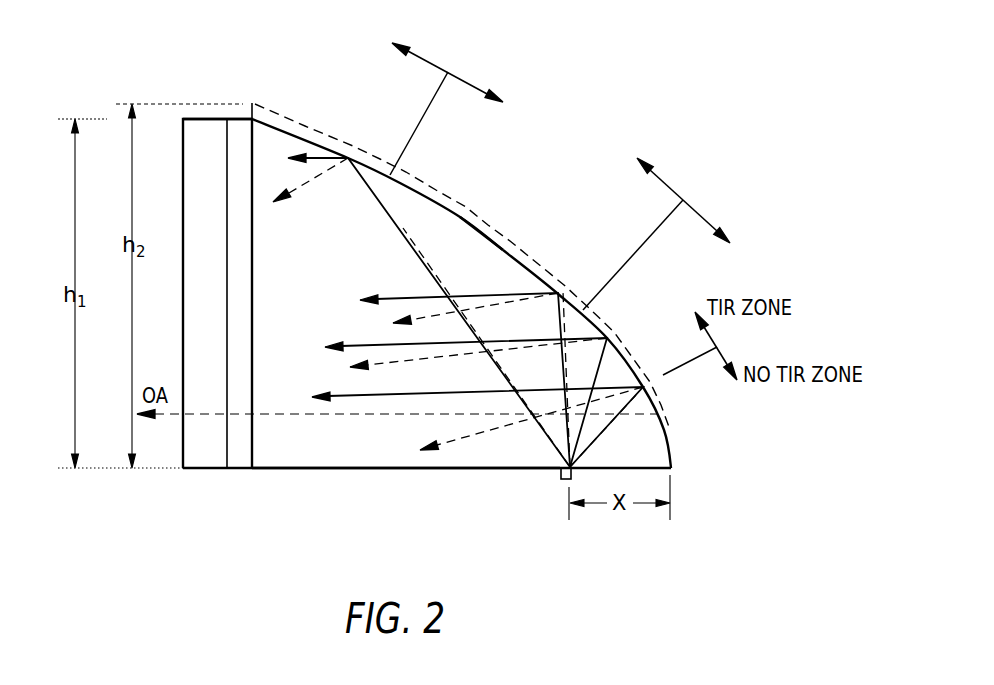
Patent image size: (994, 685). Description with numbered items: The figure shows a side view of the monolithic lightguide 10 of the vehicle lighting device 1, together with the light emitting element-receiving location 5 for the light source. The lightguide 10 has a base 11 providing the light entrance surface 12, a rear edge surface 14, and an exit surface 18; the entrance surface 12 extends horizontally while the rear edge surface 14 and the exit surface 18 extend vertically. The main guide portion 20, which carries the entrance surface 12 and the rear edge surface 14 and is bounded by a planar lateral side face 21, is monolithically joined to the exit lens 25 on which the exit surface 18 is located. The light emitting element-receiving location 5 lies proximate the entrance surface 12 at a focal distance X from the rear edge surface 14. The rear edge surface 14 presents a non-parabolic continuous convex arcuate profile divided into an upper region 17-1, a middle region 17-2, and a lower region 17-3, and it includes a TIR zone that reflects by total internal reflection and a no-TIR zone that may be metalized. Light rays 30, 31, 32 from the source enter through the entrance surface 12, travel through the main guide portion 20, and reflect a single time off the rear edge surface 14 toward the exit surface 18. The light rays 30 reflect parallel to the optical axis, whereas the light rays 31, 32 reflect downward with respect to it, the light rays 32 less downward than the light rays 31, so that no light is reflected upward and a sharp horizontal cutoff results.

The vehicle lighting device 1 is at (541, 199).
The light emitting element-receiving location 5 is at (556, 478).
The lightguide 10 is at (168, 155).
The base 11 is at (273, 470).
The light entrance surface 12 is at (357, 470).
The rear edge surface 14 is at (422, 192).
The upper region 17-1 is at (446, 97).
The middle region 17-2 is at (606, 186).
The lower region 17-3 is at (715, 299).
The exit surface 18 is at (210, 438).
The main guide portion 20 is at (563, 355).
The planar lateral side face 21 is at (270, 145).
The exit lens 25 is at (203, 118).
The light rays 30 is at (316, 162).
The light rays 31 is at (312, 180).
The light rays 32 is at (397, 293).